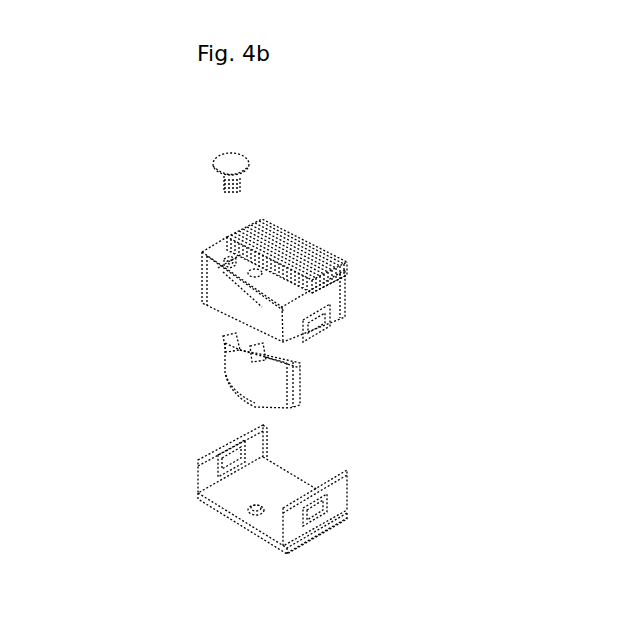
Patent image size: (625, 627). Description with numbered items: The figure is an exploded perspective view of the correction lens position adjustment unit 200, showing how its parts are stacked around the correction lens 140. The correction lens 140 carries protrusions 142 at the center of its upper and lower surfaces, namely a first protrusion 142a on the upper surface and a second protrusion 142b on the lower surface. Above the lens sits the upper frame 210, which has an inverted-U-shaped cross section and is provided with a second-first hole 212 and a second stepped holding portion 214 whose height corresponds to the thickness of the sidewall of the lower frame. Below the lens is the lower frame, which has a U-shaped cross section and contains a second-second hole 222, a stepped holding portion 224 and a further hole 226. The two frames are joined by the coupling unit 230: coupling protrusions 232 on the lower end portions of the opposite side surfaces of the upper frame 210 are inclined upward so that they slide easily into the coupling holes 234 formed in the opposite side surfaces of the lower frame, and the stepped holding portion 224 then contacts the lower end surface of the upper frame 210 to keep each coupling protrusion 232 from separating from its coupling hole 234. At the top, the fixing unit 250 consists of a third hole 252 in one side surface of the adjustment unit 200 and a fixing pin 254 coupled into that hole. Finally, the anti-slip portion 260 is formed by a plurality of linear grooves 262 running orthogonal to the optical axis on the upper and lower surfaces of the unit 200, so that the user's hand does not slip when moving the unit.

The correction lens position adjustment unit 200 is at (378, 155).
The fixing unit 250 is at (110, 175).
The fixing pin 254 is at (213, 166).
The third hole 252 is at (215, 250).
The upper frame 210 is at (202, 253).
The second-first hole 212 is at (226, 295).
The second stepped holding portion 214 is at (350, 274).
The coupling protrusion 232 is at (312, 330).
The linear grooves 262 is at (275, 226).
The anti-slip portion 260 is at (319, 258).
The correction lens 140 is at (300, 390).
The protrusions 142 is at (110, 363).
The first protrusion 142a is at (222, 346).
The second protrusion 142b is at (224, 400).
The coupling unit 230 is at (450, 420).
The stepped holding portion 224 is at (198, 488).
The second-second hole 222 is at (252, 527).
The hole 226 is at (215, 515).
The coupling hole 234 is at (350, 478).